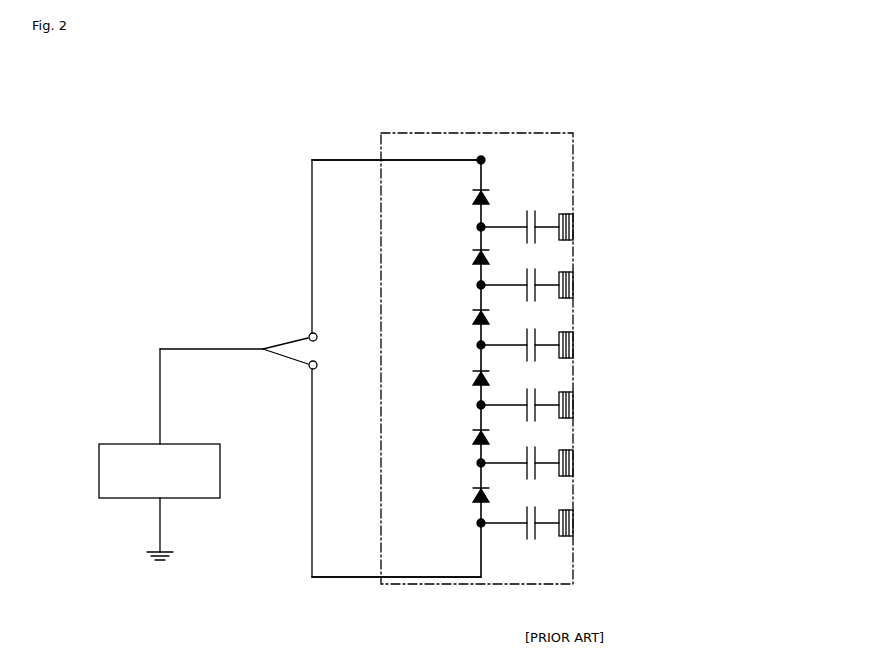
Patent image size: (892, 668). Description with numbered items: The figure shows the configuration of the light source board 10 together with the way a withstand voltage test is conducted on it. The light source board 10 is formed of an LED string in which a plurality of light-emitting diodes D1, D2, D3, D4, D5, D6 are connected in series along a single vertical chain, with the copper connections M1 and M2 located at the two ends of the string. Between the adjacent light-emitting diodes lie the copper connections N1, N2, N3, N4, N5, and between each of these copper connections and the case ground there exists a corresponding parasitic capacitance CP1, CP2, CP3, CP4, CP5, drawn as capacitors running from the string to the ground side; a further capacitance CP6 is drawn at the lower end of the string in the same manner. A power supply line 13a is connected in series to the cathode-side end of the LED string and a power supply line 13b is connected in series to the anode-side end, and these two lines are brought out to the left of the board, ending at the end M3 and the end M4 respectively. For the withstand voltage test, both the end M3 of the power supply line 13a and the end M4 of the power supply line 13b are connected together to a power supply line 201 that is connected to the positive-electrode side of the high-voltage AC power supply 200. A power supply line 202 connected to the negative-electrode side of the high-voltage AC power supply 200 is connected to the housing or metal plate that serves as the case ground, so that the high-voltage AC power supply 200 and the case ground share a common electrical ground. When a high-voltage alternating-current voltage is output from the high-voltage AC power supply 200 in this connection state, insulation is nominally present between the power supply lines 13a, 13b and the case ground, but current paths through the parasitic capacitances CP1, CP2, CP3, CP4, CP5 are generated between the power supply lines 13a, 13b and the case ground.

The light source board 10 is at (445, 133).
The power supply line 13a is at (350, 160).
The power supply line 13b is at (352, 577).
The copper connection M1 is at (485, 158).
The copper connection M2 is at (484, 526).
The end of power supply line M3 is at (309, 333).
The end of power supply line M4 is at (309, 369).
The copper connection N1 is at (478, 229).
The copper connection N2 is at (478, 287).
The copper connection N3 is at (478, 347).
The copper connection N4 is at (478, 407).
The copper connection N5 is at (478, 465).
The light-emitting diode D1 is at (468, 197).
The light-emitting diode D2 is at (468, 257).
The light-emitting diode D3 is at (468, 317).
The light-emitting diode D4 is at (468, 378).
The light-emitting diode D5 is at (468, 437).
The light-emitting diode D6 is at (468, 495).
The parasitic capacitance CP1 is at (536, 212).
The parasitic capacitance CP2 is at (536, 270).
The parasitic capacitance CP3 is at (536, 330).
The parasitic capacitance CP4 is at (536, 390).
The parasitic capacitance CP5 is at (536, 448).
The sixth capacitor CP6 is at (536, 508).
The high-voltage AC power supply 200 is at (195, 444).
The power supply line 201 is at (197, 348).
The power supply line 202 is at (161, 518).